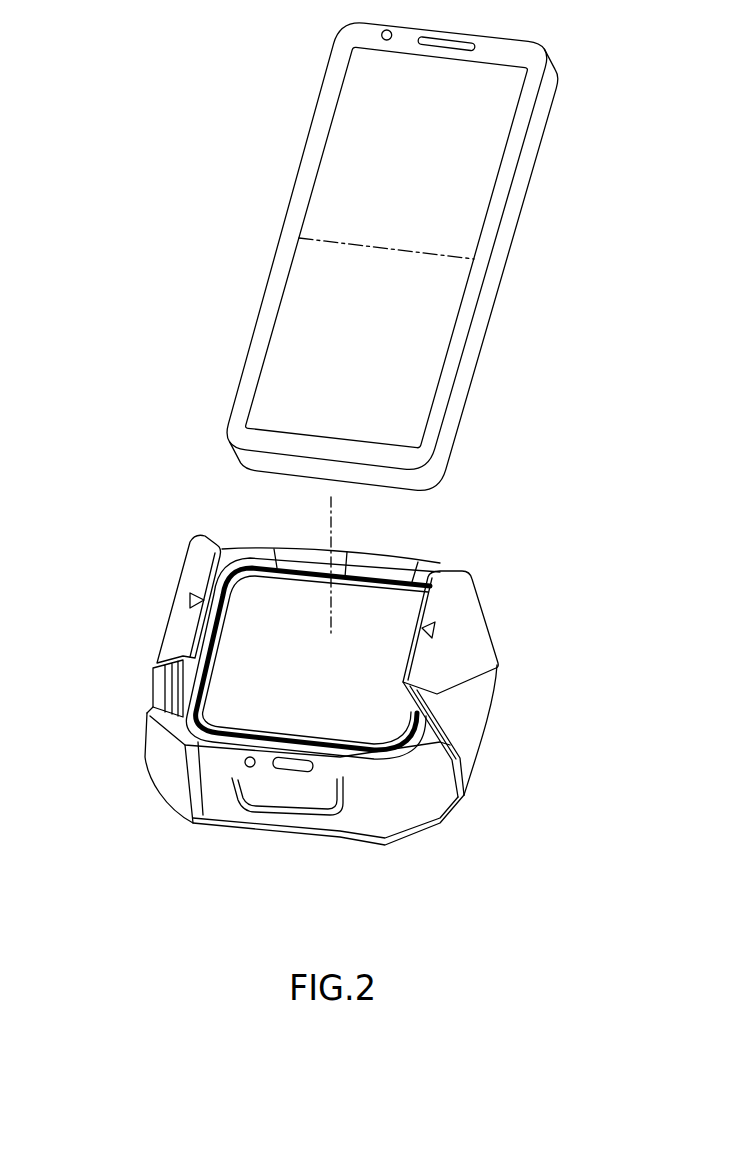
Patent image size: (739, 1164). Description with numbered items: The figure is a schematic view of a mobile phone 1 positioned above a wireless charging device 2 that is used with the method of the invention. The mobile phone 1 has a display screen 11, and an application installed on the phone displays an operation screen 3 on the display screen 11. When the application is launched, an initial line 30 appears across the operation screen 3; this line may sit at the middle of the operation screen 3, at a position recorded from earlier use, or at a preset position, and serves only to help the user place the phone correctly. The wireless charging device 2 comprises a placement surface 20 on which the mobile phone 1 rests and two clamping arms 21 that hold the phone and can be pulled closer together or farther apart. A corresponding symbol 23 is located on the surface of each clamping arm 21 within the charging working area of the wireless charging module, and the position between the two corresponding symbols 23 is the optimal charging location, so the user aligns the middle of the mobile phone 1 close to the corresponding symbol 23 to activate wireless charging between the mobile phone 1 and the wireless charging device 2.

The mobile phone 1 is at (525, 163).
The display screen 11 is at (332, 117).
The operation screen 3 is at (352, 200).
The initial line 30 is at (387, 248).
The wireless charging device 2 is at (324, 650).
The placement surface 20 is at (368, 602).
The clamping arm 21 is at (200, 567).
The corresponding symbol 23 is at (190, 600).